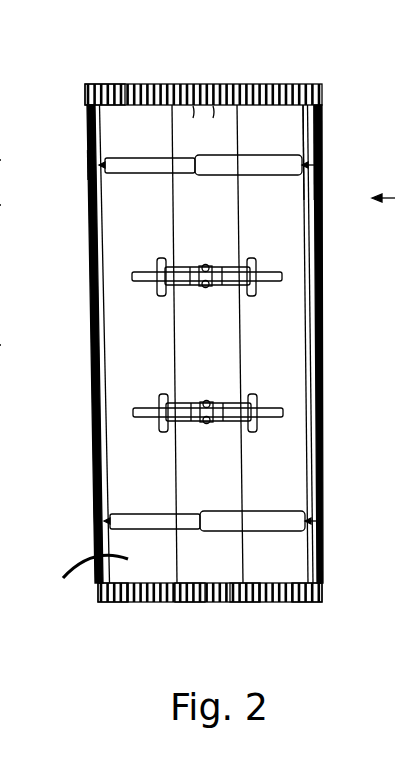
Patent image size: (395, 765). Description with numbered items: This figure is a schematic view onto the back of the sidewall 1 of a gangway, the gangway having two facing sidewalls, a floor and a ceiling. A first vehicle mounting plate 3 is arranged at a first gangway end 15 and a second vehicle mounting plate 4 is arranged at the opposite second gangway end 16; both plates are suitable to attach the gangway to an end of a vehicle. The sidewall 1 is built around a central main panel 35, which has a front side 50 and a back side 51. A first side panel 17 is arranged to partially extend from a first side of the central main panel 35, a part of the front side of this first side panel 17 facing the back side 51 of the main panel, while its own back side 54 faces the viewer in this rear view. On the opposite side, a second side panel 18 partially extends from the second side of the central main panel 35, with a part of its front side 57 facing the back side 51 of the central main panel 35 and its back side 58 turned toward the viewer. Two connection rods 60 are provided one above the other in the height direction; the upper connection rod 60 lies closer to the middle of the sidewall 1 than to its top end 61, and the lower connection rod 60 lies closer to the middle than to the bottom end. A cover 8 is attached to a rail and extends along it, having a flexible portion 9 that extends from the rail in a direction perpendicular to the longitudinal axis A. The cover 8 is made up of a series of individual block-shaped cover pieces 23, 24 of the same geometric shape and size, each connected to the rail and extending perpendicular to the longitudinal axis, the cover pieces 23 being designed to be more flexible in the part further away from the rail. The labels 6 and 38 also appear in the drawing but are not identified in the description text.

The sidewall 1 is at (327, 73).
The first vehicle mounting plate 3 is at (322, 405).
The second vehicle mounting plate 4 is at (94, 290).
The frame 6 is at (6, 206).
The cover 8 is at (175, 604).
The flexible portion 9 is at (242, 604).
The first gangway end 15 is at (320, 136).
The second gangway end 16 is at (99, 162).
The first side panel 17 is at (288, 137).
The second side panel 18 is at (128, 142).
The cover piece 23 is at (207, 604).
The cover piece 24 is at (114, 604).
The central main panel 35 is at (222, 84).
The strut 38 is at (10, 396).
The front side 50 is at (9, 161).
The back side 51 is at (178, 84).
The back side 54 is at (290, 478).
The front side 57 is at (50, 520).
The back side 58 is at (77, 583).
The connection rod 60 is at (214, 291).
The top end 61 is at (127, 84).